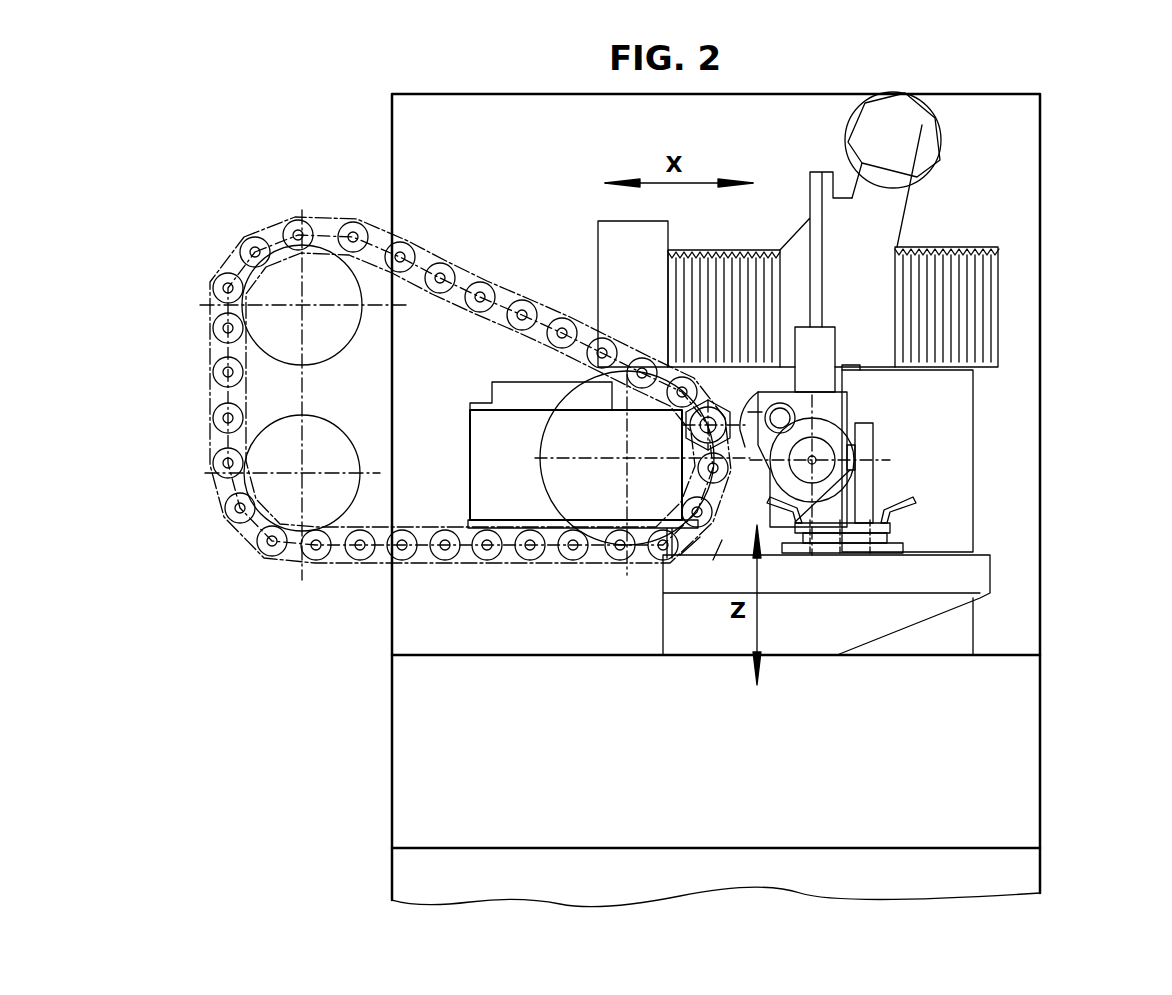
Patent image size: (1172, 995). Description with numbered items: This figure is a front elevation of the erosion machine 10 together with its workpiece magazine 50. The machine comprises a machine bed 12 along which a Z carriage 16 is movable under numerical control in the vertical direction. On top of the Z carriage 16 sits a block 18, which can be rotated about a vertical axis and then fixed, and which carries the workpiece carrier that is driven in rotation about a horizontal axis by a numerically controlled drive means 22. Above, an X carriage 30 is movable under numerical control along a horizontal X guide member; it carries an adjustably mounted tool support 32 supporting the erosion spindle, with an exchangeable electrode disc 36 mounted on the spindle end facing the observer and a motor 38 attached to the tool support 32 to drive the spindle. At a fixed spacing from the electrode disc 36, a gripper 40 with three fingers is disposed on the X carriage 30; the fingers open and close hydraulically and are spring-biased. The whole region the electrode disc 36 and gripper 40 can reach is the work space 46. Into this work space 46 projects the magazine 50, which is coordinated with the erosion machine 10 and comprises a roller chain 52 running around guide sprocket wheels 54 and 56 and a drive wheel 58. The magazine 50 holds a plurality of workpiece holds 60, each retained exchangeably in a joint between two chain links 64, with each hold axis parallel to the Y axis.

The erosion machine 10 is at (1082, 190).
The machine bed 12 is at (407, 765).
The Z carriage 16 is at (897, 617).
The block 18 is at (865, 435).
The drive means 22 is at (845, 472).
The X carriage 30 is at (815, 258).
The tool support 32 is at (895, 202).
The electrode disc 36 is at (738, 395).
The motor 38 is at (940, 132).
The gripper 40 is at (683, 441).
The work space 46 is at (720, 540).
The magazine 50 is at (163, 266).
The roller chain 52 is at (210, 447).
The guide sprocket wheel 54 is at (373, 328).
The guide sprocket wheel 56 is at (352, 427).
The drive wheel 58 is at (540, 442).
The workpiece hold 60 is at (487, 548).
The chain link 64 is at (418, 535).